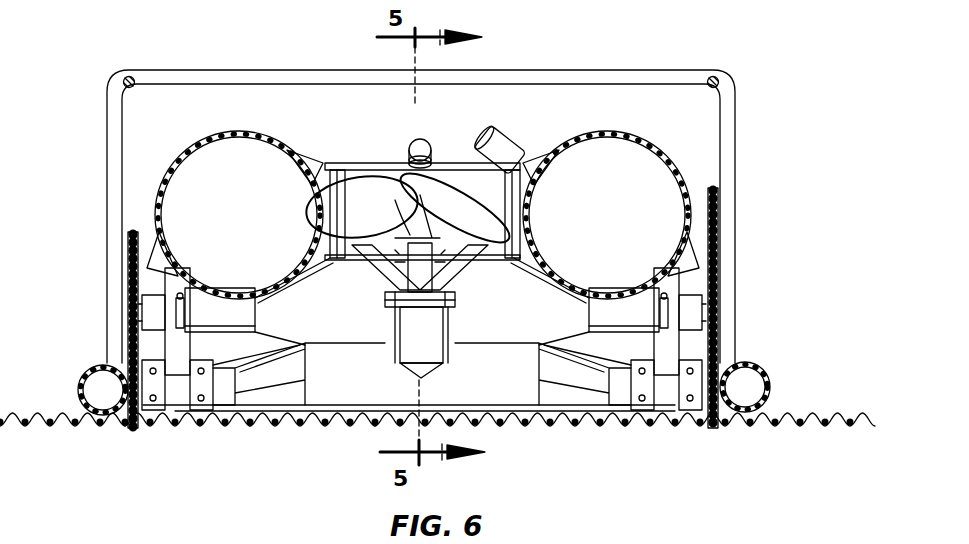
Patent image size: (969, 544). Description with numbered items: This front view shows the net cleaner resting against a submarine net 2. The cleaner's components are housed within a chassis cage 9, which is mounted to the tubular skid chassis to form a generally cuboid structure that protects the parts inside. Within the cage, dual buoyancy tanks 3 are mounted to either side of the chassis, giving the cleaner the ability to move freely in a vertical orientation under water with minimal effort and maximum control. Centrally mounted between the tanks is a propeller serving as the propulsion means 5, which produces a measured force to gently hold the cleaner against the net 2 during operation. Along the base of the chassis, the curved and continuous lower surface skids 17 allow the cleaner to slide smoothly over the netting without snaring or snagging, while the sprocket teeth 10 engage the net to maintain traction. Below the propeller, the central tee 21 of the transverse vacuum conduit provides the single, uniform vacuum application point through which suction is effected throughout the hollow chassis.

The submarine net 2 is at (338, 440).
The buoyancy means 3 is at (246, 233).
The propulsion means 5 is at (450, 186).
The chassis cage 9 is at (270, 76).
The sprocket teeth 10 is at (142, 268).
The lower surface skids 17 is at (290, 410).
The central tee 21 is at (478, 364).